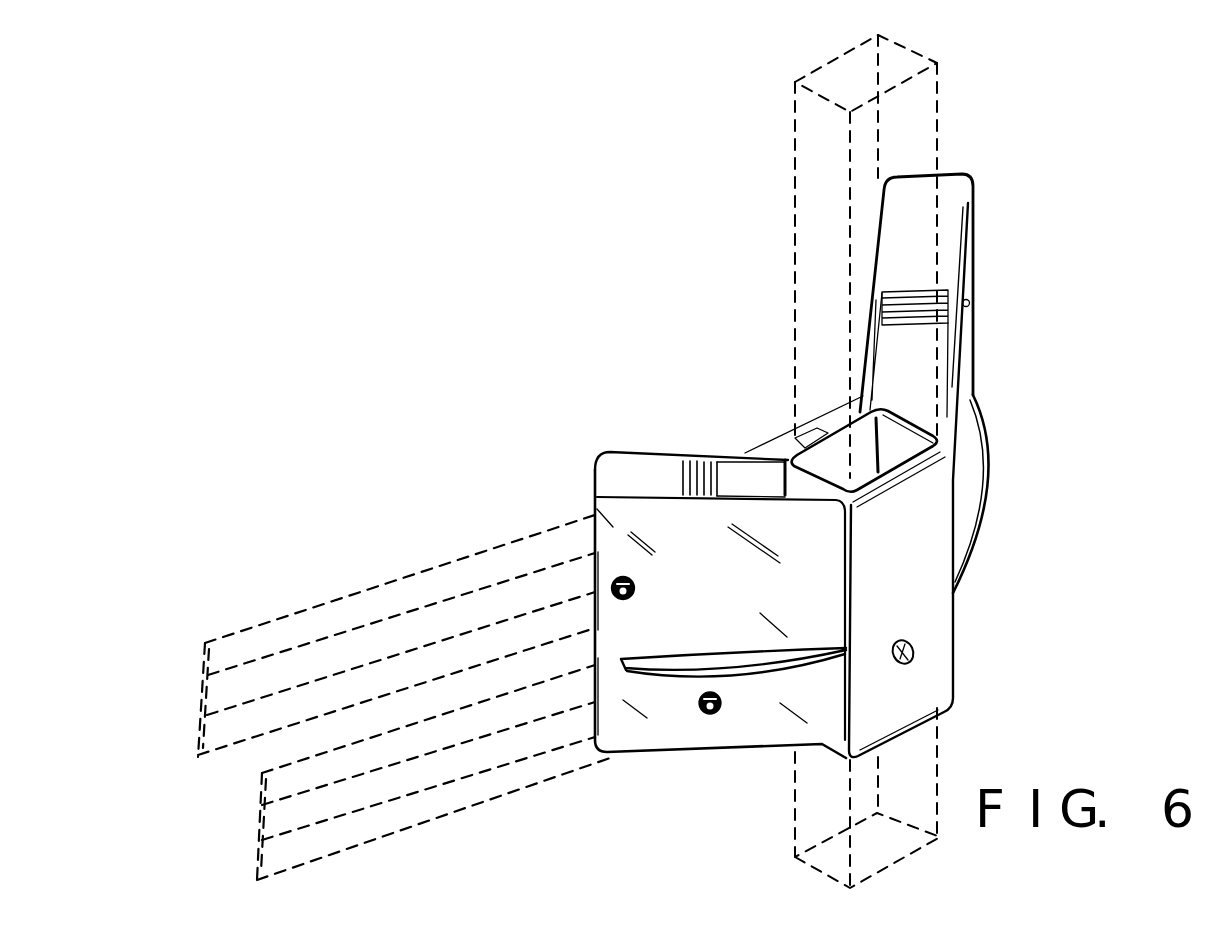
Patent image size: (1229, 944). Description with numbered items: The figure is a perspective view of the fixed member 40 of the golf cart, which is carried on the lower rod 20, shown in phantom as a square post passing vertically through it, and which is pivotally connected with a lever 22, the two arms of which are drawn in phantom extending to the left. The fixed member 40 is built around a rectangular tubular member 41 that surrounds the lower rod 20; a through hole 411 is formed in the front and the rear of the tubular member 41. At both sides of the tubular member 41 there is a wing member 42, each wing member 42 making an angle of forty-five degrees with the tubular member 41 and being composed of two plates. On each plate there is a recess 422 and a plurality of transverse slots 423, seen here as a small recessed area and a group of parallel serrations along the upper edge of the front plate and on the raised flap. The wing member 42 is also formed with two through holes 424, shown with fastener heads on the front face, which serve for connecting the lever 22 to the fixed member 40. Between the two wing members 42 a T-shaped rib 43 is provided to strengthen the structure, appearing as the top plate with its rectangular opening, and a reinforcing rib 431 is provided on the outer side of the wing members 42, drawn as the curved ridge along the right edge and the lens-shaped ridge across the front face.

The lower rod 20 is at (932, 117).
The lever 22 is at (262, 669).
The fixed member 40 is at (1070, 334).
The rectangular tubular member 41 is at (947, 480).
The through hole 411 is at (915, 652).
The wing member 42 is at (960, 214).
The recess 422 is at (743, 473).
The transverse slots 423 is at (690, 458).
The through holes 424 is at (710, 716).
The T-shaped rib 43 is at (771, 393).
The reinforcing rib 431 is at (980, 460).